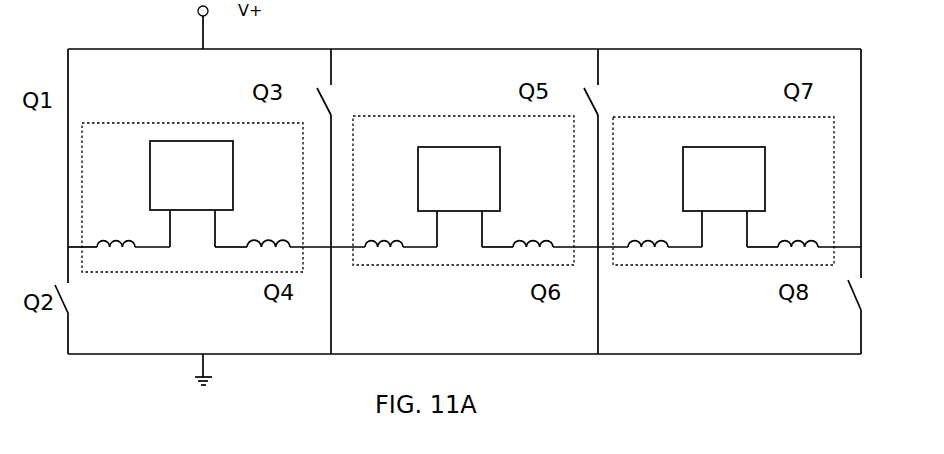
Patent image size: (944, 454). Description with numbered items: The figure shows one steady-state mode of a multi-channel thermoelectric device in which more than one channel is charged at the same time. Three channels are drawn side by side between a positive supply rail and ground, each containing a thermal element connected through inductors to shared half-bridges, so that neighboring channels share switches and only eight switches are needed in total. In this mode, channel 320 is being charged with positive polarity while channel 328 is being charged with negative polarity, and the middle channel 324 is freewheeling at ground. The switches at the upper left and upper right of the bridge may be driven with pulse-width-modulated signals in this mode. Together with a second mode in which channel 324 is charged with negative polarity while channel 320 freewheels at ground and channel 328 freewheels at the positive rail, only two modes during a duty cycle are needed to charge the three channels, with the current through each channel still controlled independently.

The channel 320 is at (193, 123).
The channel 324 is at (463, 116).
The channel 328 is at (725, 116).